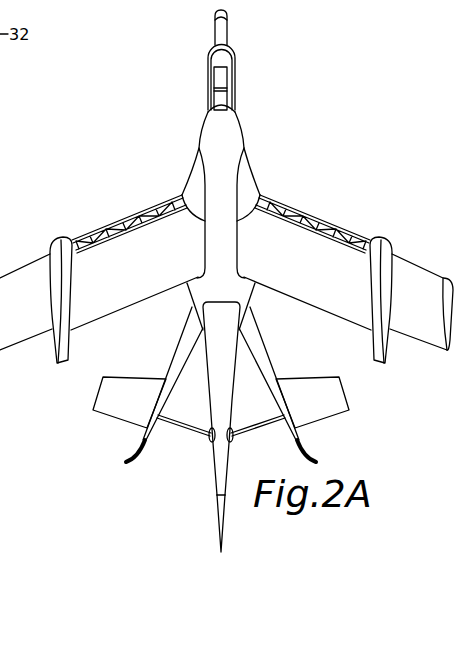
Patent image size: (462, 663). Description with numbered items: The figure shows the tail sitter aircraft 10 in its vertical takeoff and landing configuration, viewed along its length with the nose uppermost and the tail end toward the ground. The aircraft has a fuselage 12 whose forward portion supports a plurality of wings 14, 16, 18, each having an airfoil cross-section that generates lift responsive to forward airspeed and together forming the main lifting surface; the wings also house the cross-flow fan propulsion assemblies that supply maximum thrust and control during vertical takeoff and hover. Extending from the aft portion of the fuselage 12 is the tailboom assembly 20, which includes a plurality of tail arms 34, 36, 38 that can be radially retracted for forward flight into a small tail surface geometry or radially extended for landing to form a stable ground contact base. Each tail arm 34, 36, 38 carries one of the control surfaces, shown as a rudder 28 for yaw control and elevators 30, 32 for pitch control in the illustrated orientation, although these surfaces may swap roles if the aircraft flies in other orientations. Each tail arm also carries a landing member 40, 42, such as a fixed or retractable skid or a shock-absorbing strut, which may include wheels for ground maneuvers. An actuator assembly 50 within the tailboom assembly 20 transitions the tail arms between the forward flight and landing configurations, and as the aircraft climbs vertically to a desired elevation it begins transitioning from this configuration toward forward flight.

The tail sitter aircraft 10 is at (152, 170).
The fuselage 12 is at (235, 135).
The wing 14 is at (237, 82).
The wing 16 is at (291, 277).
The wing 18 is at (151, 277).
The tailboom assembly 20 is at (278, 366).
The rudder 28 is at (337, 397).
The elevator 30 is at (105, 397).
The elevator 32 is at (217, 517).
The tail arm 34 is at (268, 348).
The tail arm 36 is at (172, 360).
The tail arm 38 is at (222, 400).
The landing member 40 is at (302, 449).
The landing member 42 is at (130, 455).
The actuator assembly 50 is at (181, 438).